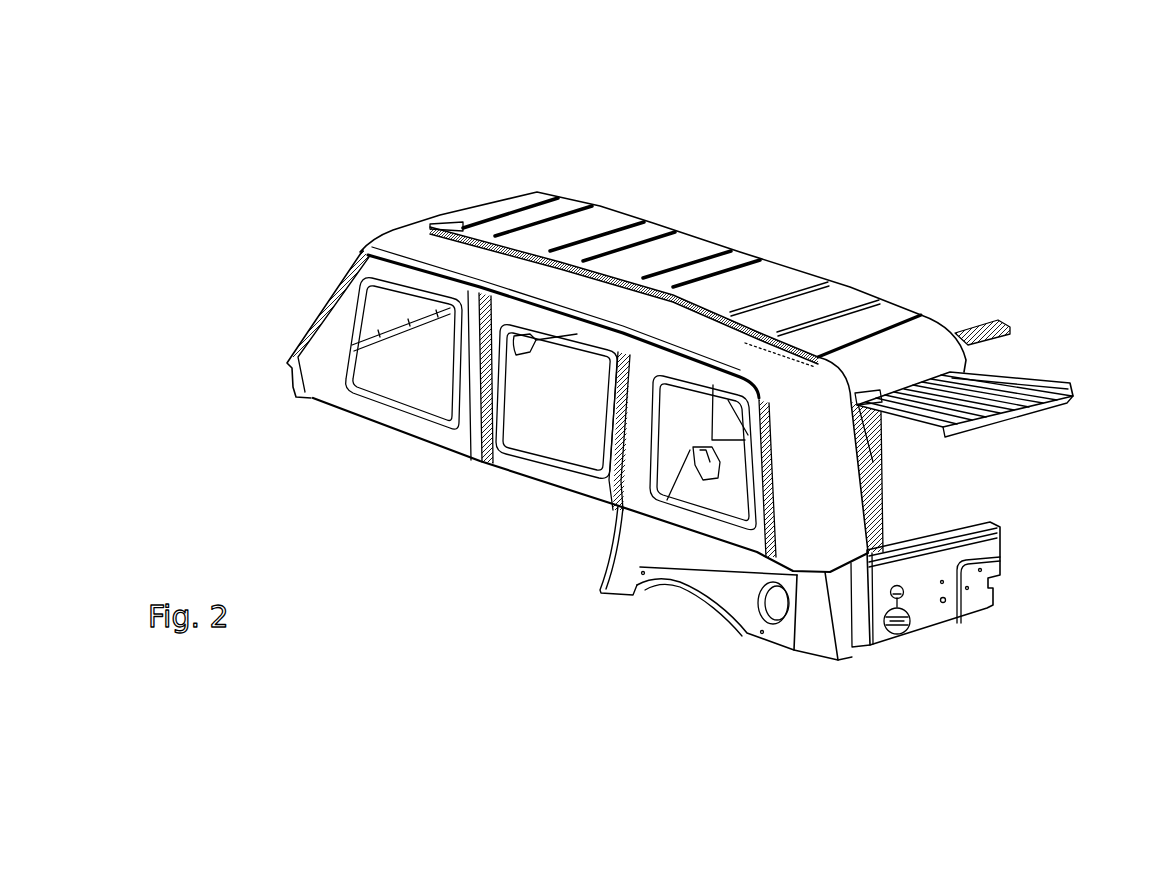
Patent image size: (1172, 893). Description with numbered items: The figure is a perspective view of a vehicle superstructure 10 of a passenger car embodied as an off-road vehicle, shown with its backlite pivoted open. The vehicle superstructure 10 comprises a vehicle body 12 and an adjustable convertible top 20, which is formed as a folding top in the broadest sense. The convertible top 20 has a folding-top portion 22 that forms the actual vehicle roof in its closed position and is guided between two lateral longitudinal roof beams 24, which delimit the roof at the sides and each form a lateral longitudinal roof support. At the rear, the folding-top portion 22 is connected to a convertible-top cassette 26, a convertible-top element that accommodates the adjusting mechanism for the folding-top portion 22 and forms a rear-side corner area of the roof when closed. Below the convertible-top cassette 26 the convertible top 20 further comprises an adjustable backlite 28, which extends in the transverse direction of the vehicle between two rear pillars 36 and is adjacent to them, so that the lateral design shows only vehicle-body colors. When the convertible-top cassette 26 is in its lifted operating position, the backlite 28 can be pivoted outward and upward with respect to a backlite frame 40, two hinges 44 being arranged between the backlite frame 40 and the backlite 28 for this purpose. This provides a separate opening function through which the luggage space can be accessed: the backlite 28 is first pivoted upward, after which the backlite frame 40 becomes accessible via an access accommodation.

The vehicle superstructure 10 is at (741, 250).
The vehicle body 12 is at (607, 592).
The convertible top 20 is at (543, 192).
The folding-top portion 22 is at (623, 215).
The lateral longitudinal roof beam 24 is at (396, 231).
The convertible-top cassette 26 is at (921, 316).
The backlite 28 is at (1030, 378).
The rear pillar 36 is at (827, 573).
The backlite frame 40 is at (877, 495).
The hinge 44 is at (883, 392).